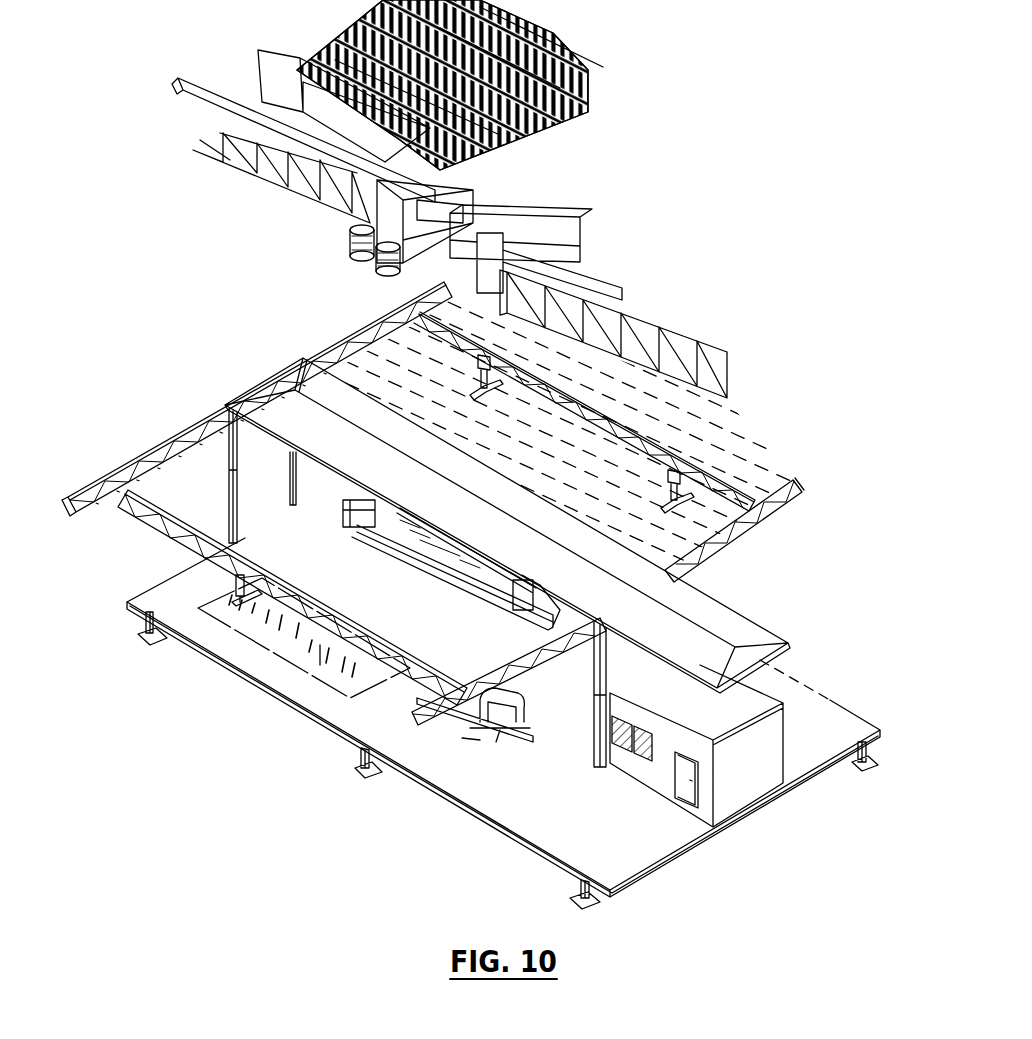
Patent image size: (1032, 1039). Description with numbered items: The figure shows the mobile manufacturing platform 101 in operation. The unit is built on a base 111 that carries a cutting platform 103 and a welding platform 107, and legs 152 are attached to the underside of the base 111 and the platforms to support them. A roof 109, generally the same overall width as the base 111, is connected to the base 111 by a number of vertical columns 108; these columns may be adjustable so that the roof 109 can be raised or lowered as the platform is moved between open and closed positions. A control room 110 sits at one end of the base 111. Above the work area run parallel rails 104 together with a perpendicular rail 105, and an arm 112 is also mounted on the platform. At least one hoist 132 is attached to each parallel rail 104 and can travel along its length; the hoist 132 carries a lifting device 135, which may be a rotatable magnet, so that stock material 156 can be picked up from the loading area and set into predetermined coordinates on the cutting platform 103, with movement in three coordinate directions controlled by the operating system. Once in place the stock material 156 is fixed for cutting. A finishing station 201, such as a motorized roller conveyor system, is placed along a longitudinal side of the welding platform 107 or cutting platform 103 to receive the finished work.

The mobile manufacturing platform 101 is at (792, 557).
The cutting platform 103 is at (577, 845).
The parallel rails 104 is at (181, 548).
The perpendicular rail 105 is at (362, 330).
The welding platform 107 is at (803, 693).
The vertical columns 108 is at (222, 484).
The roof 109 is at (792, 645).
The control room 110 is at (794, 800).
The base 111 is at (420, 620).
The arm 112 is at (350, 540).
The hoist 132 is at (226, 584).
The lifting device 135 is at (372, 690).
The legs 152 is at (352, 768).
The stock material 156 is at (300, 652).
The finishing station 201 is at (605, 163).